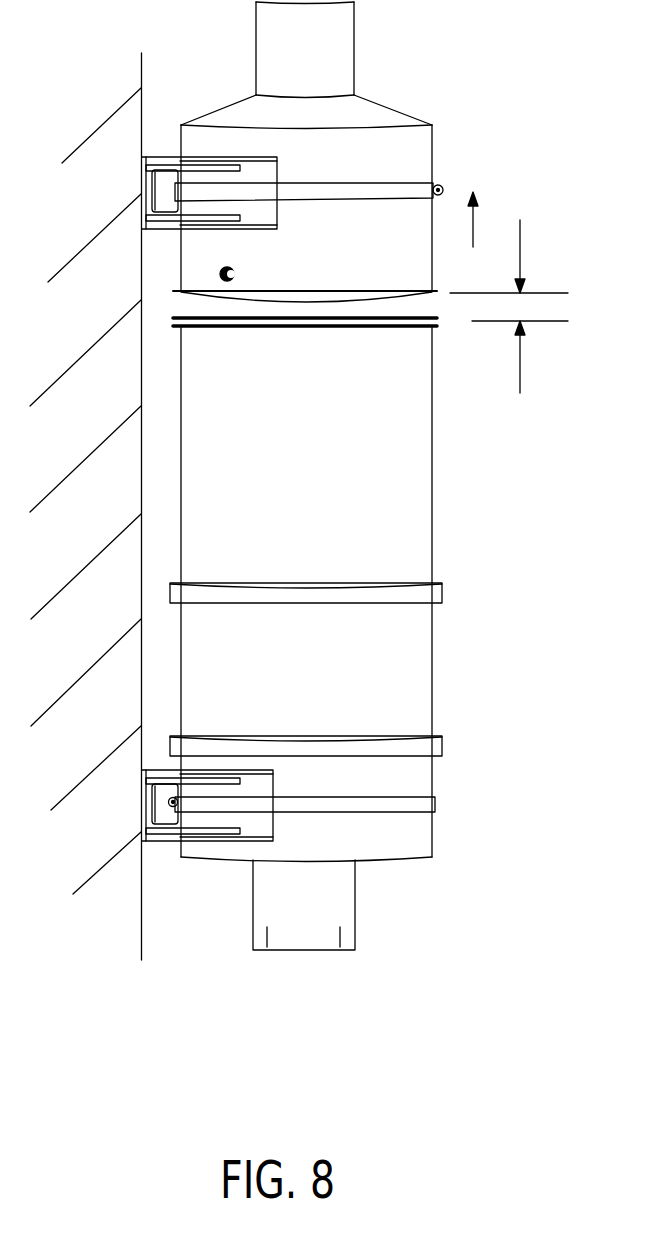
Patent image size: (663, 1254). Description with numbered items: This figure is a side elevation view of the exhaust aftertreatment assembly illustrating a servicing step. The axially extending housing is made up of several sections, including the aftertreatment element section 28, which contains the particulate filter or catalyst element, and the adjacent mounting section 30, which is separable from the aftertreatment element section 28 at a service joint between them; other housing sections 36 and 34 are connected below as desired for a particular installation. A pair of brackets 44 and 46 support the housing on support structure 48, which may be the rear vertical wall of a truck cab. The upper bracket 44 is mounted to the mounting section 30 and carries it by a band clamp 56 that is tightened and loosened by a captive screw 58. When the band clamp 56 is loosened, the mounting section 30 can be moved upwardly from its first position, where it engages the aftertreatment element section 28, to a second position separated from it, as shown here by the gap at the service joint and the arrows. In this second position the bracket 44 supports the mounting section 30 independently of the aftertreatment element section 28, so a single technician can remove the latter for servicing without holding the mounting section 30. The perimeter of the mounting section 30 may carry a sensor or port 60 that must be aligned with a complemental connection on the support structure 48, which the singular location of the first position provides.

The support structure 48 is at (143, 75).
The mounting section 30 is at (432, 137).
The aftertreatment element section 28 is at (432, 437).
The housing section 36 is at (432, 668).
The housing section 34 is at (430, 830).
The bracket 44 is at (277, 163).
The bracket 46 is at (270, 818).
The band clamp 56 is at (413, 192).
The captive screw 58 is at (438, 182).
The sensor or port 60 is at (237, 275).